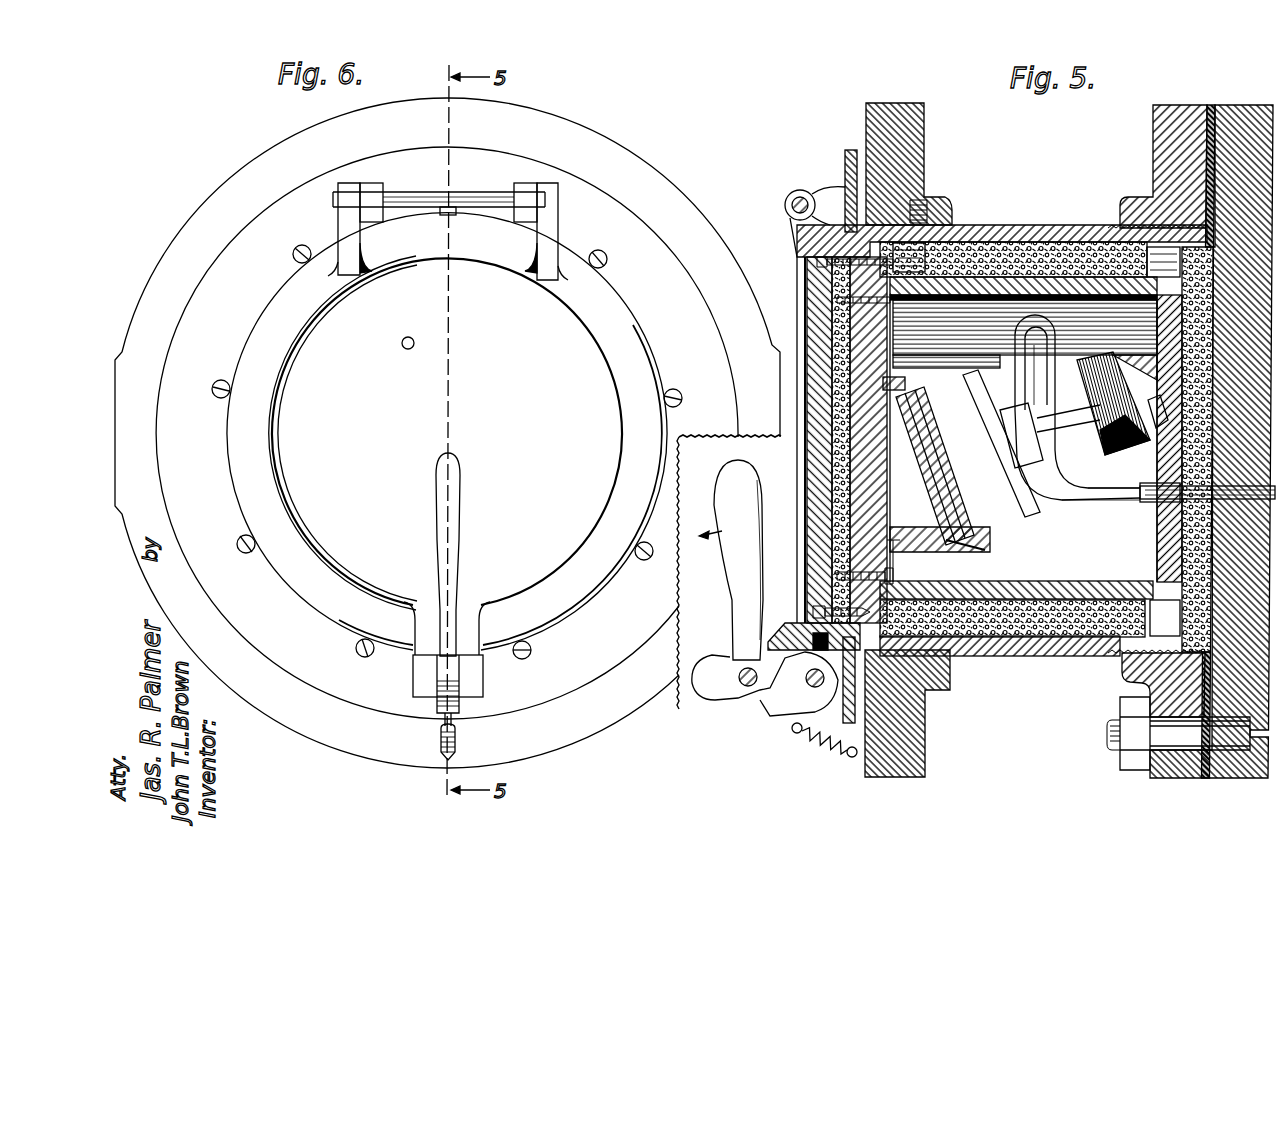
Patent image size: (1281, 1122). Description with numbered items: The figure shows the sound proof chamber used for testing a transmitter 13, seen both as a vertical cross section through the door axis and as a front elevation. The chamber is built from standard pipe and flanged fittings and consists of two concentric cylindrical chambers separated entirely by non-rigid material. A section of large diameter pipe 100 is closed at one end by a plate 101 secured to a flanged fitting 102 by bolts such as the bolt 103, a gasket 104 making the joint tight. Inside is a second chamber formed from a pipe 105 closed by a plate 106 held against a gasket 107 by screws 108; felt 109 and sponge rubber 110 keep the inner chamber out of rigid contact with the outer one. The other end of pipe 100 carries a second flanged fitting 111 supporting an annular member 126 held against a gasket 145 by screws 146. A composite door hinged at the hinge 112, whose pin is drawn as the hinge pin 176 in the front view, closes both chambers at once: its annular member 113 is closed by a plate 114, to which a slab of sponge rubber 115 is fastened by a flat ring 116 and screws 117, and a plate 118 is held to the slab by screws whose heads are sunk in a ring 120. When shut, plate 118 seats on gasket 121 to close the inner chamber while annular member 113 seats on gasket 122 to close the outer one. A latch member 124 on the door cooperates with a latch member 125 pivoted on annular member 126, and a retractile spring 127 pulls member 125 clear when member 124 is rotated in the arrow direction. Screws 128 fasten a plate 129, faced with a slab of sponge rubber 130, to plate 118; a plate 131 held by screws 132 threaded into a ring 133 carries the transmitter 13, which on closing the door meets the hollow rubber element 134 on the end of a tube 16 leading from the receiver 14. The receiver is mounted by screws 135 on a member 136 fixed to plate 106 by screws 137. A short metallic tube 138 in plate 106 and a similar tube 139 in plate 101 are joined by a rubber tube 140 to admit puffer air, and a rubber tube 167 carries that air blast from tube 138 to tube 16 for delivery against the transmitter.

In FIG. 5, the transmitter 13 is at (982, 400).
In FIG. 5, the receiver 14 is at (1060, 405).
In FIG. 5, the tube 16 is at (1062, 420).
In FIG. 5, the large diameter pipe 100 is at (1038, 232).
In FIG. 5, the plate 101 is at (1232, 108).
In FIG. 5, the flanged fitting 102 is at (1172, 108).
In FIG. 5, the bolt 103 is at (1108, 735).
In FIG. 5, the gasket 104 is at (1211, 108).
In FIG. 5, the pipe 105 is at (985, 250).
In FIG. 5, the plate 106 is at (1110, 575).
In FIG. 5, the gasket 107 is at (1167, 618).
In FIG. 5, the screw 108 is at (1125, 632).
In FIG. 5, the felt 109 is at (1082, 250).
In FIG. 5, the sponge rubber 110 is at (1160, 560).
In FIG. 6, the second flanged fitting 111 is at (580, 130).
In FIG. 5, the second flanged fitting 111 is at (866, 120).
In FIG. 6, the hinge 112 is at (372, 192).
In FIG. 5, the hinge 112 is at (795, 192).
In FIG. 6, the annular member 113 is at (592, 583).
In FIG. 5, the annular member 113 is at (798, 622).
In FIG. 6, the plate 114 is at (445, 433).
In FIG. 5, the plate 114 is at (806, 450).
In FIG. 5, the slab of sponge rubber 115 is at (840, 473).
In FIG. 5, the flat ring 116 is at (960, 232).
In FIG. 5, the screw 117 is at (816, 262).
In FIG. 5, the plate 118 is at (885, 485).
In FIG. 5, the ring 120 is at (836, 300).
In FIG. 5, the gasket 121 is at (896, 578).
In FIG. 5, the gasket 122 is at (770, 700).
In FIG. 6, the latch member 124 is at (460, 521).
In FIG. 5, the latch member 124 is at (760, 582).
In FIG. 6, the latch member 125 is at (468, 702).
In FIG. 5, the latch member 125 is at (720, 698).
In FIG. 6, the annular member 126 is at (538, 703).
In FIG. 5, the annular member 126 is at (848, 756).
In FIG. 6, the retractile spring 127 is at (458, 742).
In FIG. 5, the retractile spring 127 is at (816, 742).
In FIG. 5, the screw 128 is at (905, 384).
In FIG. 5, the plate 129 is at (945, 520).
In FIG. 5, the slab of sponge rubber 130 is at (990, 535).
In FIG. 5, the plate 131 is at (998, 458).
In FIG. 5, the screw 132 is at (995, 510).
In FIG. 5, the ring 133 is at (938, 440).
In FIG. 5, the hollow rubber element 134 is at (1091, 510).
In FIG. 5, the screw 135 is at (1150, 440).
In FIG. 5, the member 136 is at (1125, 450).
In FIG. 5, the screw 137 is at (1155, 500).
In FIG. 5, the short metallic tube 138 is at (1175, 500).
In FIG. 5, the tube 139 is at (1185, 545).
In FIG. 5, the rubber tube 140 is at (1200, 502).
In FIG. 5, the gasket 145 is at (852, 152).
In FIG. 6, the screw 146 is at (295, 256).
In FIG. 5, the screw 146 is at (930, 210).
In FIG. 5, the rubber tube 167 is at (1075, 482).
In FIG. 6, the hinge pin 176 is at (444, 206).